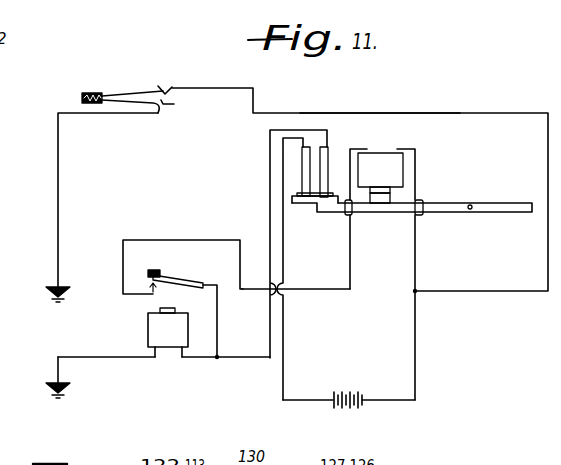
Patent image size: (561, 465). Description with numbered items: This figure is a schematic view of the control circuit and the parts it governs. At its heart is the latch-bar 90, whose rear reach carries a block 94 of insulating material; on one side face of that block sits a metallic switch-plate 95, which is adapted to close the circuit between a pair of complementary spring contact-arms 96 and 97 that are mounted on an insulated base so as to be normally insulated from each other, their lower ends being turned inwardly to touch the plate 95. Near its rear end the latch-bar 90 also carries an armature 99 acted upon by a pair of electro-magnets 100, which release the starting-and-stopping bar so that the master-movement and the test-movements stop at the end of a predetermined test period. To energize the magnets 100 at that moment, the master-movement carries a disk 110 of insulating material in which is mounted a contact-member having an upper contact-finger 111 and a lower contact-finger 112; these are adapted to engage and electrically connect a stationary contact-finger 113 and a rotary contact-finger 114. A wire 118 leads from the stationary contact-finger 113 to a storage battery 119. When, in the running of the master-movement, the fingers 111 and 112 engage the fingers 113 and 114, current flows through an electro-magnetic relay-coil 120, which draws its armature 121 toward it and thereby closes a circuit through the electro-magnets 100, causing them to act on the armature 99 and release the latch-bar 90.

The latch-bar 90 is at (441, 213).
The block of insulating material 94 is at (297, 205).
The metallic switch-plate 95 is at (298, 192).
The spring contact-arm 96 is at (306, 160).
The spring contact-arm 97 is at (326, 159).
The armature 99 is at (380, 205).
The electro-magnets 100 is at (382, 160).
The disk of insulating material 110 is at (83, 97).
The upper contact-finger 111 is at (131, 94).
The lower contact-finger 112 is at (132, 104).
The stationary contact-finger 113 is at (206, 89).
The rotary contact-finger 114 is at (157, 114).
The wire 118 is at (379, 112).
The storage battery 119 is at (350, 409).
The electro-magnetic relay-coil 120 is at (155, 331).
The armature 121 is at (171, 279).